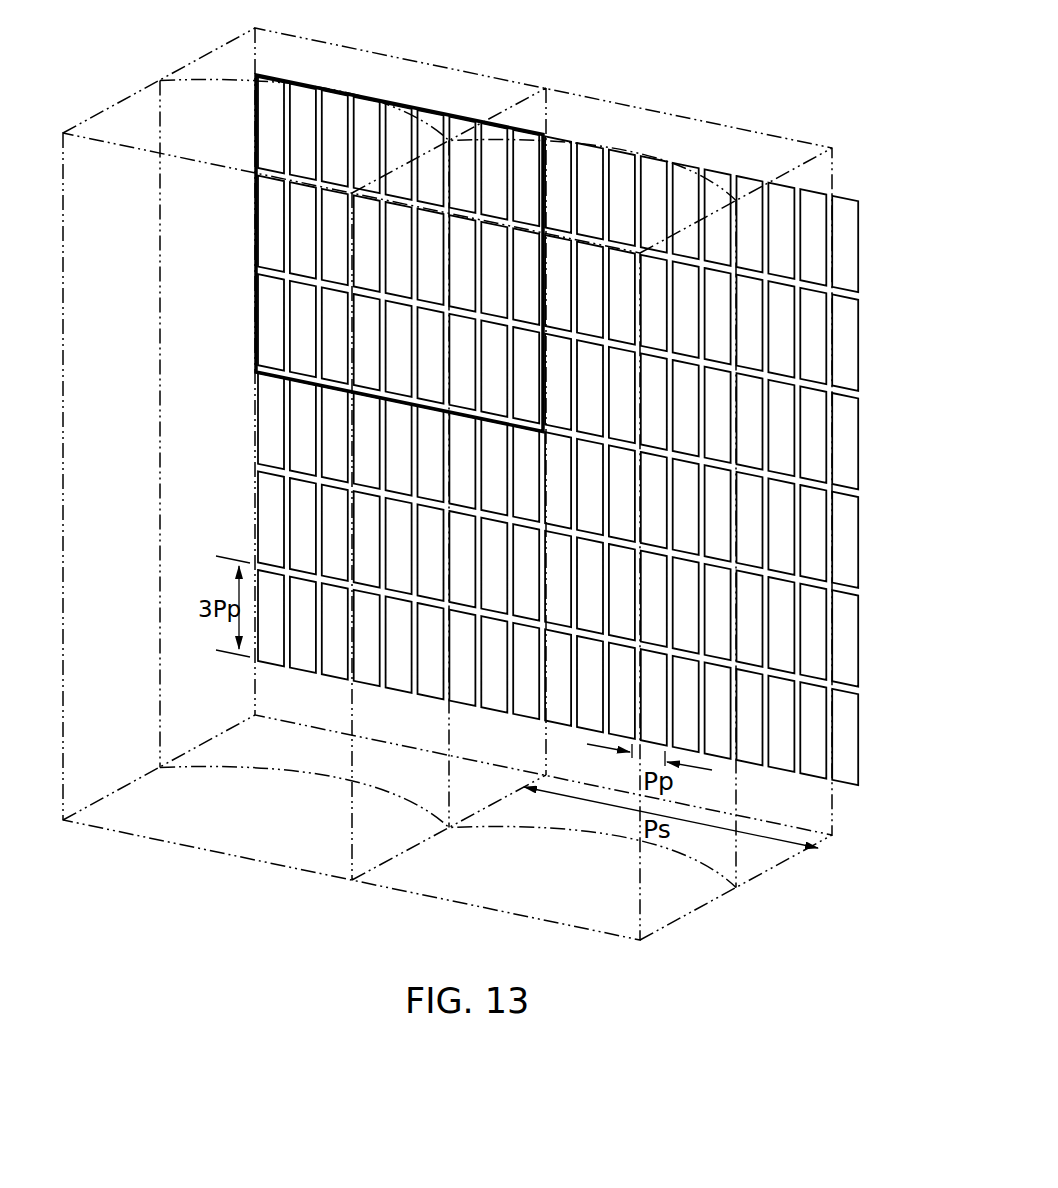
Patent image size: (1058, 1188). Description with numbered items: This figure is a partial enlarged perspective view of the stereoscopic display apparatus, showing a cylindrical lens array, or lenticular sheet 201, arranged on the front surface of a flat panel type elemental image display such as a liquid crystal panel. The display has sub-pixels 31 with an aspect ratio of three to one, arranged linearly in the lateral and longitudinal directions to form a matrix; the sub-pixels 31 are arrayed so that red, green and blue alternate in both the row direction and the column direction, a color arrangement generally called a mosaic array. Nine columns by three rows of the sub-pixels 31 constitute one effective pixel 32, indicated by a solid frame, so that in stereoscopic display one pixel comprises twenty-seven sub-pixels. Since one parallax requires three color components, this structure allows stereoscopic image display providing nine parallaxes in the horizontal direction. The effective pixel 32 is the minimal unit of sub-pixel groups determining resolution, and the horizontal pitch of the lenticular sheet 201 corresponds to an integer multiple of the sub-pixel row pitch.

The sub-pixels 31 is at (843, 197).
The effective pixel 32 is at (457, 117).
The cylindrical lens array (lenticular sheet) 201 is at (212, 840).